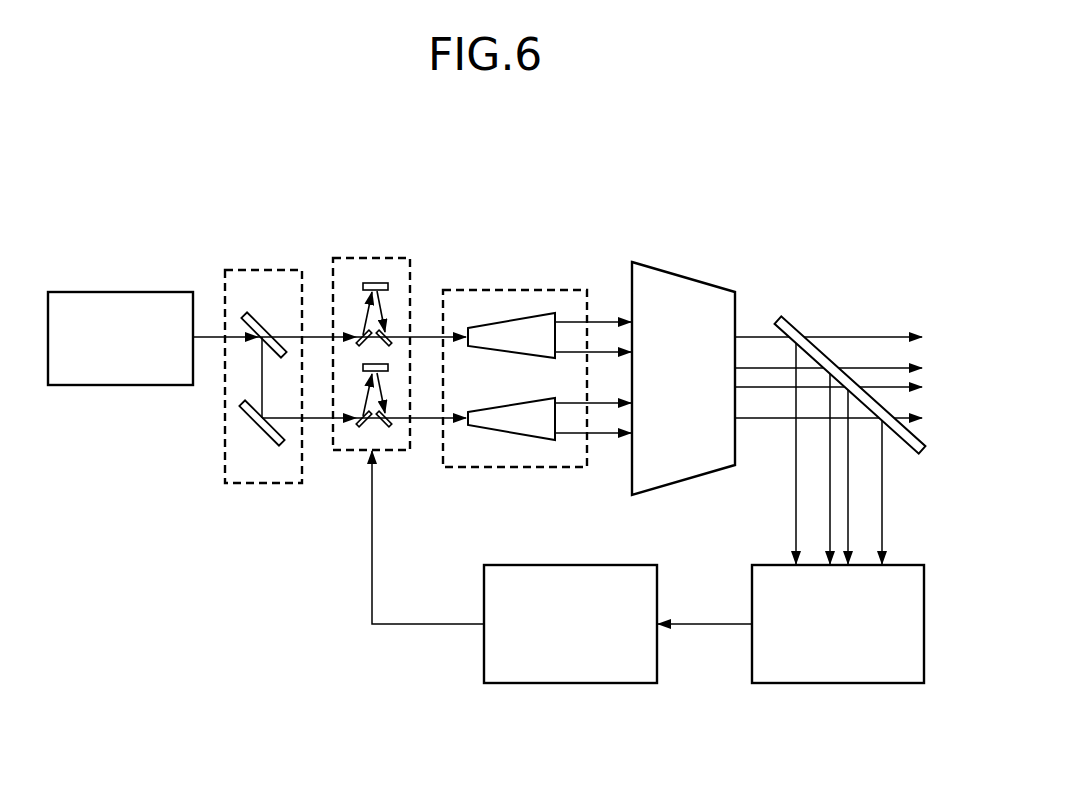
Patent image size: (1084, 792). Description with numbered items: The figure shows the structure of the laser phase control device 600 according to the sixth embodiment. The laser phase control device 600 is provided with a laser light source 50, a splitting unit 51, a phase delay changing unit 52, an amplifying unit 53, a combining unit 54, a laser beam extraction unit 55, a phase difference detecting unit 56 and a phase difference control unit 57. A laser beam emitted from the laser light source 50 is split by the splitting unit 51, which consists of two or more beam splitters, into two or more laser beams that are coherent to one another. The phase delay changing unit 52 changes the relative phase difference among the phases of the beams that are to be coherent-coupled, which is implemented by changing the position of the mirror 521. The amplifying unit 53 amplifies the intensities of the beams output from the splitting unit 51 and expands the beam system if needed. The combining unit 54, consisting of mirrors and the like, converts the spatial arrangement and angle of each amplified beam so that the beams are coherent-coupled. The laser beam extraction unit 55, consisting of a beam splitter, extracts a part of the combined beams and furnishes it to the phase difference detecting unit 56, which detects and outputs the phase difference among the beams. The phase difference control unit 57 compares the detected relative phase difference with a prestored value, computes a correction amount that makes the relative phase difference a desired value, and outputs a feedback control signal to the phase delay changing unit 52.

The laser phase control device 600 is at (725, 156).
The laser light source 50 is at (120, 290).
The splitting unit 51 is at (263, 270).
The phase delay changing unit 52 is at (372, 257).
The mirror 521 is at (390, 367).
The amplifying unit 53 is at (513, 290).
The combining unit 54 is at (687, 275).
The laser beam extraction unit 55 is at (797, 320).
The phase difference detecting unit 56 is at (840, 684).
The phase difference control unit 57 is at (568, 563).